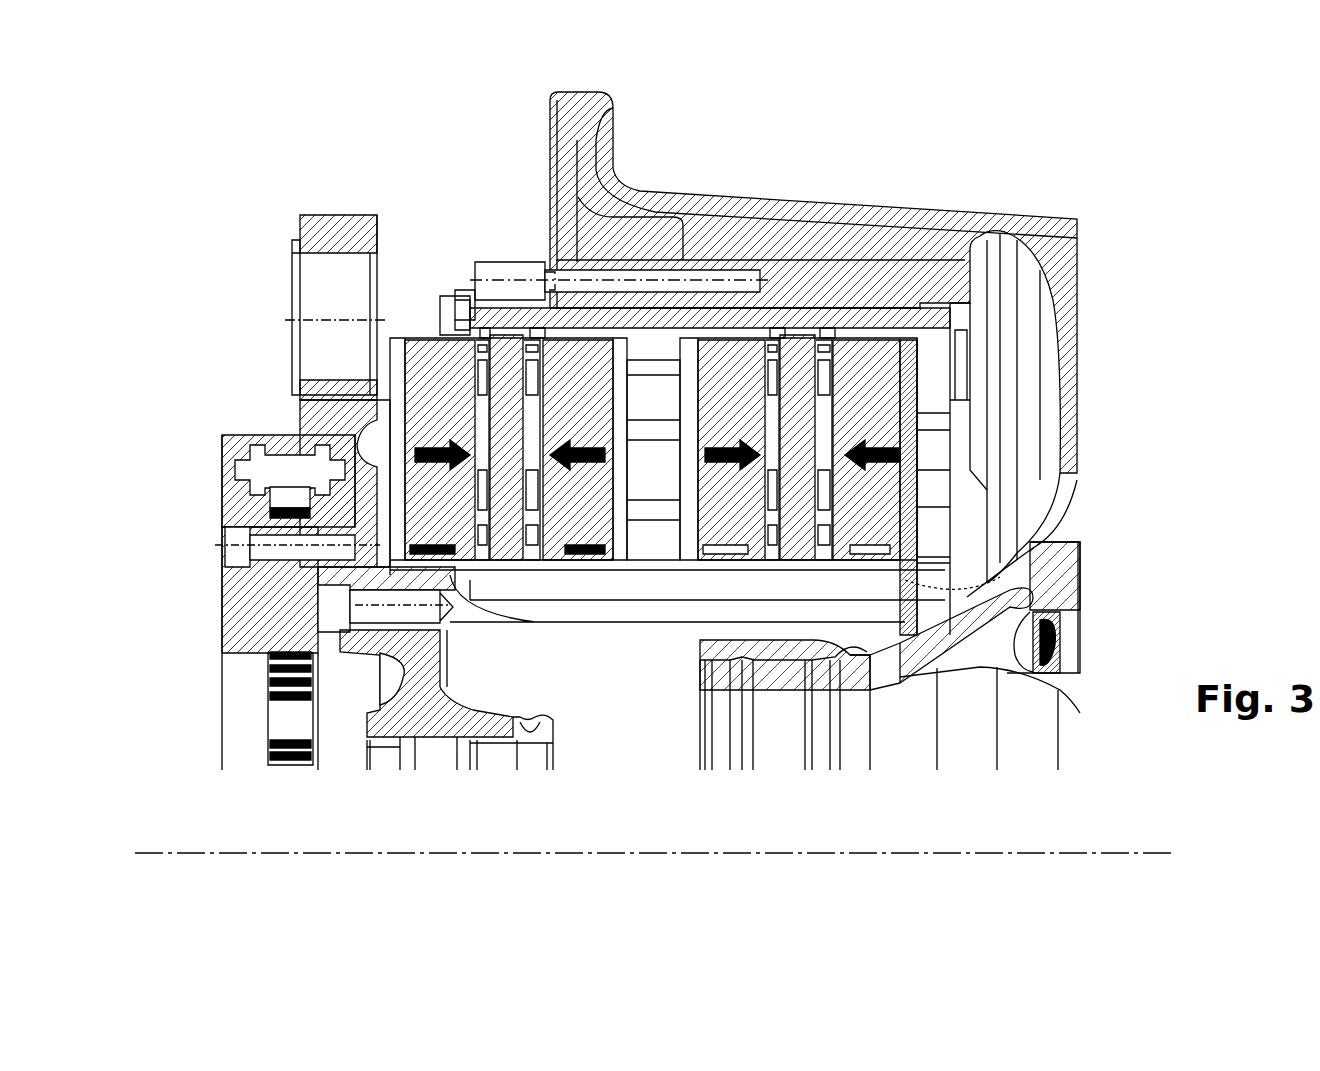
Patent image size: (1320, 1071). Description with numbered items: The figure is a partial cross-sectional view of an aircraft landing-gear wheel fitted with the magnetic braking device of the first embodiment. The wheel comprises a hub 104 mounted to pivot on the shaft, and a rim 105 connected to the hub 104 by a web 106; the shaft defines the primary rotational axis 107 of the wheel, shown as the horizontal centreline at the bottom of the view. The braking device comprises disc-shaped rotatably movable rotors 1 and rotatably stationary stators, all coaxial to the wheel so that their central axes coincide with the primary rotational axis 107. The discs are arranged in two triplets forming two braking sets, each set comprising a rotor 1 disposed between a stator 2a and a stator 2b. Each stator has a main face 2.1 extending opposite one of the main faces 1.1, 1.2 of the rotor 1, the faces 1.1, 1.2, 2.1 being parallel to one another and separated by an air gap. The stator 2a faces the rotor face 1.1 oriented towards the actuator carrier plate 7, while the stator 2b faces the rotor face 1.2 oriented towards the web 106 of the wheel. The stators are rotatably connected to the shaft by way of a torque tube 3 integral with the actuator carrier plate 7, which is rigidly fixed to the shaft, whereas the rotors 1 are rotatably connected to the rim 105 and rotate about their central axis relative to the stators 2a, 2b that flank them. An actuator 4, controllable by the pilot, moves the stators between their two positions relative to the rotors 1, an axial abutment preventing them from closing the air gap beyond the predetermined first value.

The rotor 1 is at (510, 355).
The main face of the rotor 1.1 is at (483, 378).
The main face of the rotor 1.2 is at (534, 383).
The stator 2a is at (445, 528).
The stator 2b is at (580, 530).
The main face of the stator 2.1 is at (485, 405).
The torque tube 3 is at (398, 585).
The actuator 4 is at (340, 180).
The actuator carrier plate 7 is at (302, 410).
The hub 104 is at (720, 660).
The rim 105 is at (928, 222).
The web 106 is at (1067, 470).
The primary rotational axis 107 is at (1133, 850).